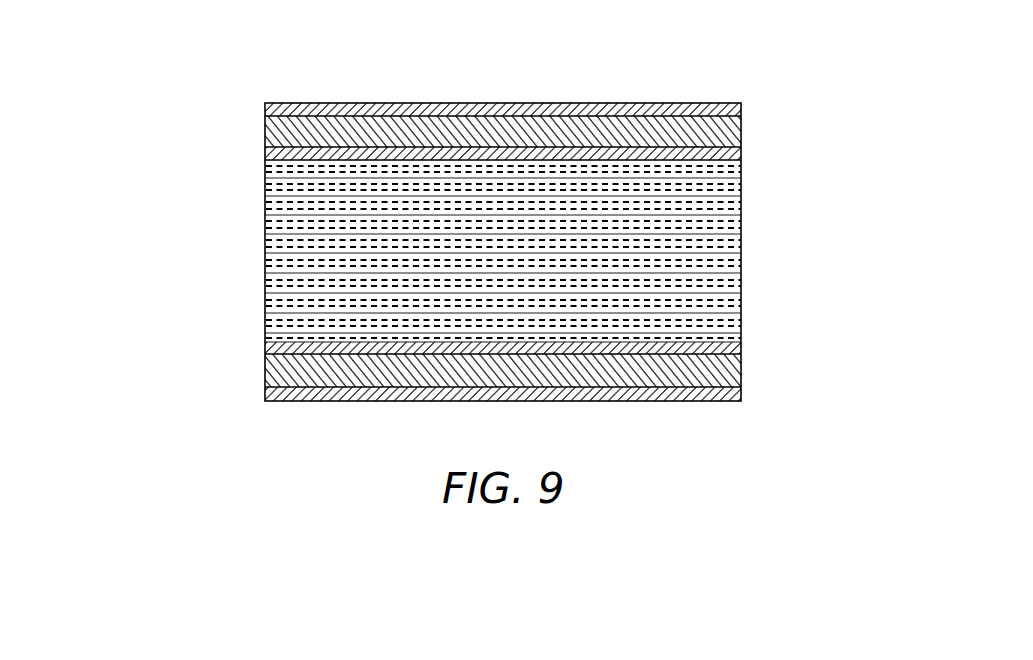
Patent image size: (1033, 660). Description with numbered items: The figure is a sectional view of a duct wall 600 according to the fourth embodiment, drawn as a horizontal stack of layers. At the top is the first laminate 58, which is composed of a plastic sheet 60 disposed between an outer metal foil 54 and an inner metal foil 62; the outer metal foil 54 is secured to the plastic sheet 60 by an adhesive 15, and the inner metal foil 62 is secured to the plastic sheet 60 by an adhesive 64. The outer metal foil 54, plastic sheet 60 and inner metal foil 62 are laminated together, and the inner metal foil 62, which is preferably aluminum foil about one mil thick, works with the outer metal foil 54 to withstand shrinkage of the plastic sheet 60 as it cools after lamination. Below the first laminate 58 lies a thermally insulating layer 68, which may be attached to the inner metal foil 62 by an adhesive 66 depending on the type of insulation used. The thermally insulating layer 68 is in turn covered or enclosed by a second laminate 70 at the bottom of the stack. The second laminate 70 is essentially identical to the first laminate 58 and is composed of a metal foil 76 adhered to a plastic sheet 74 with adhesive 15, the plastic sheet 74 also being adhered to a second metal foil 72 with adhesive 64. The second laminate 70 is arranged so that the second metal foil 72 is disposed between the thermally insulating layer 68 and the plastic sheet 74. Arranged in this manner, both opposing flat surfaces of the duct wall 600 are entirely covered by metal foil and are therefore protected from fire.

The duct wall 600 is at (225, 277).
The adhesive 15 is at (741, 110).
The outer metal foil 54 is at (265, 110).
The first laminate 58 is at (748, 128).
The plastic sheet 60 is at (265, 133).
The inner metal foil 62 is at (265, 151).
The adhesive 64 is at (741, 147).
The adhesive 66 is at (741, 160).
The thermally insulating layer 68 is at (263, 263).
The second laminate 70 is at (753, 372).
The second metal foil 72 is at (263, 347).
The plastic sheet 74 is at (262, 372).
The metal foil 76 is at (259, 400).